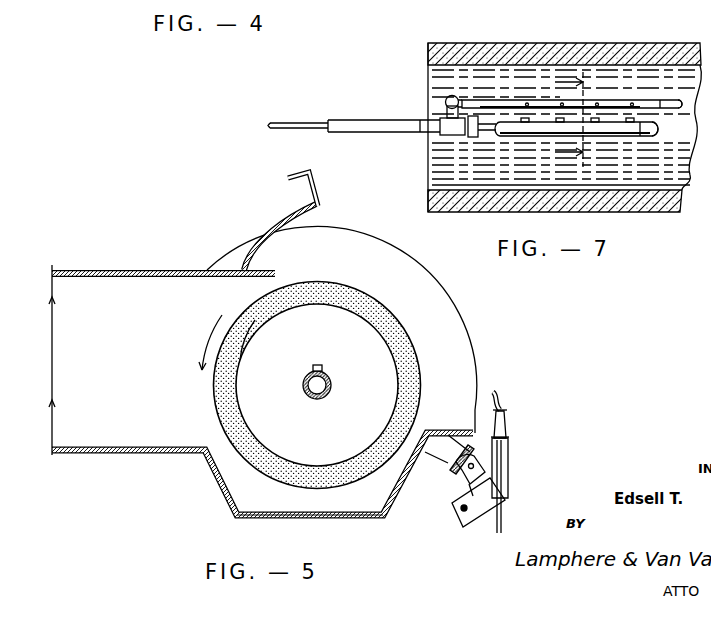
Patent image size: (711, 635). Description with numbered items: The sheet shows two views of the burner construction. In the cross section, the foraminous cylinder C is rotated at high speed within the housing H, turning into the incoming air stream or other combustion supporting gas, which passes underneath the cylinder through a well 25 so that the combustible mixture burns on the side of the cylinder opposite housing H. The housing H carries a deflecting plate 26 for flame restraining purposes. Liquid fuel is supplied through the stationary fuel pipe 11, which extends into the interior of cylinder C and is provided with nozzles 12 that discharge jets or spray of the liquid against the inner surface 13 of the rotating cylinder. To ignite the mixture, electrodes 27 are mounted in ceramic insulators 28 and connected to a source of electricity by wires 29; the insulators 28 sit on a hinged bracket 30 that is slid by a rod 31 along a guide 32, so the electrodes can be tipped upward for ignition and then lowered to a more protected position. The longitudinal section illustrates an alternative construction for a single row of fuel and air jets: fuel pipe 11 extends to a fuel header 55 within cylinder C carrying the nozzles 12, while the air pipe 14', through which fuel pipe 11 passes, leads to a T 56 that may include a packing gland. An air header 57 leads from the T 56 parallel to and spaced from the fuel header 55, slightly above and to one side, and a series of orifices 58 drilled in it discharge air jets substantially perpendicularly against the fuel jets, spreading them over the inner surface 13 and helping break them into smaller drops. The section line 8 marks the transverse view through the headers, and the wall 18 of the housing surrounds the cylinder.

In FIG. 7, the section line 8- 8 is at (569, 120).
In FIG. 7, the fuel pipe 11 is at (305, 122).
In FIG. 5, the fuel pipe 11 is at (332, 385).
In FIG. 7, the nozzles 12 is at (633, 118).
In FIG. 5, the nozzles 12 is at (321, 365).
In FIG. 7, the inner surface 13 is at (681, 172).
In FIG. 5, the inner surface 13 is at (242, 349).
In FIG. 7, the air pipe 14' is at (384, 140).
In FIG. 7, the housing 18 is at (670, 212).
In FIG. 5, the housing 18 is at (418, 361).
In FIG. 5, the well 25 is at (342, 504).
In FIG. 5, the deflecting plate 26 is at (320, 200).
In FIG. 5, the electrodes 27 is at (502, 400).
In FIG. 5, the insulators 28 is at (506, 425).
In FIG. 5, the wires 29 is at (503, 516).
In FIG. 5, the hinged bracket 30 is at (510, 465).
In FIG. 5, the rod 31 is at (461, 509).
In FIG. 5, the guide 32 is at (458, 465).
In FIG. 7, the fuel header 55 is at (512, 136).
In FIG. 7, the T 56 is at (455, 136).
In FIG. 7, the air header 57 is at (490, 100).
In FIG. 7, the orifices 58 is at (633, 102).
In FIG. 7, the foraminous cylinder C is at (554, 43).
In FIG. 5, the foraminous cylinder C is at (400, 316).
In FIG. 5, the housing H is at (118, 270).